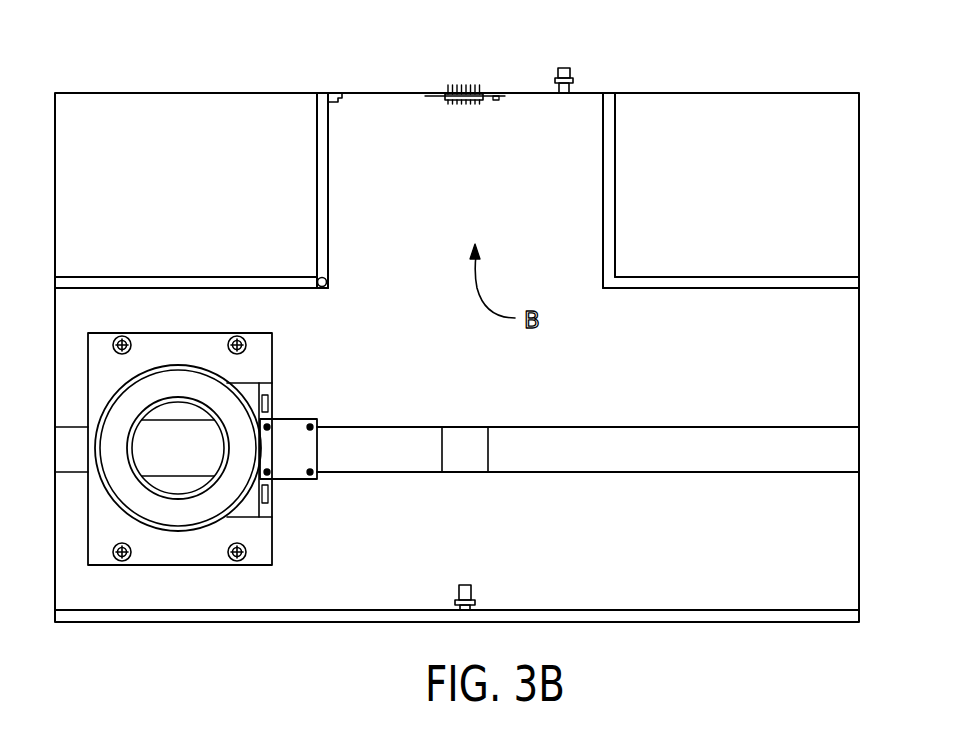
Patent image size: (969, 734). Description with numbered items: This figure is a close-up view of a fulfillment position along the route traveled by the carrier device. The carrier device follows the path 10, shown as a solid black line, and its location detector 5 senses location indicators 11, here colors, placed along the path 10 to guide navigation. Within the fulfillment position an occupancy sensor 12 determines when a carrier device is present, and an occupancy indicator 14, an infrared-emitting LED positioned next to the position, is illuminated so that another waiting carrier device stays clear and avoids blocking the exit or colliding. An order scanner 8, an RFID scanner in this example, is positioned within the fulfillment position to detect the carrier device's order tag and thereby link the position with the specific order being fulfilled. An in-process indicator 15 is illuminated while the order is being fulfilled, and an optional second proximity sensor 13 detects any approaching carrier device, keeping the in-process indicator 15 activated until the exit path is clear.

The location detector 5 is at (291, 418).
The order scanner 8 is at (463, 85).
The path 10 is at (668, 425).
The location indicator 11 is at (464, 440).
The occupancy sensor 12 is at (565, 68).
The second proximity sensor 13 is at (465, 583).
The occupancy indicator 14 is at (325, 286).
The in-process indicator 15 is at (345, 98).